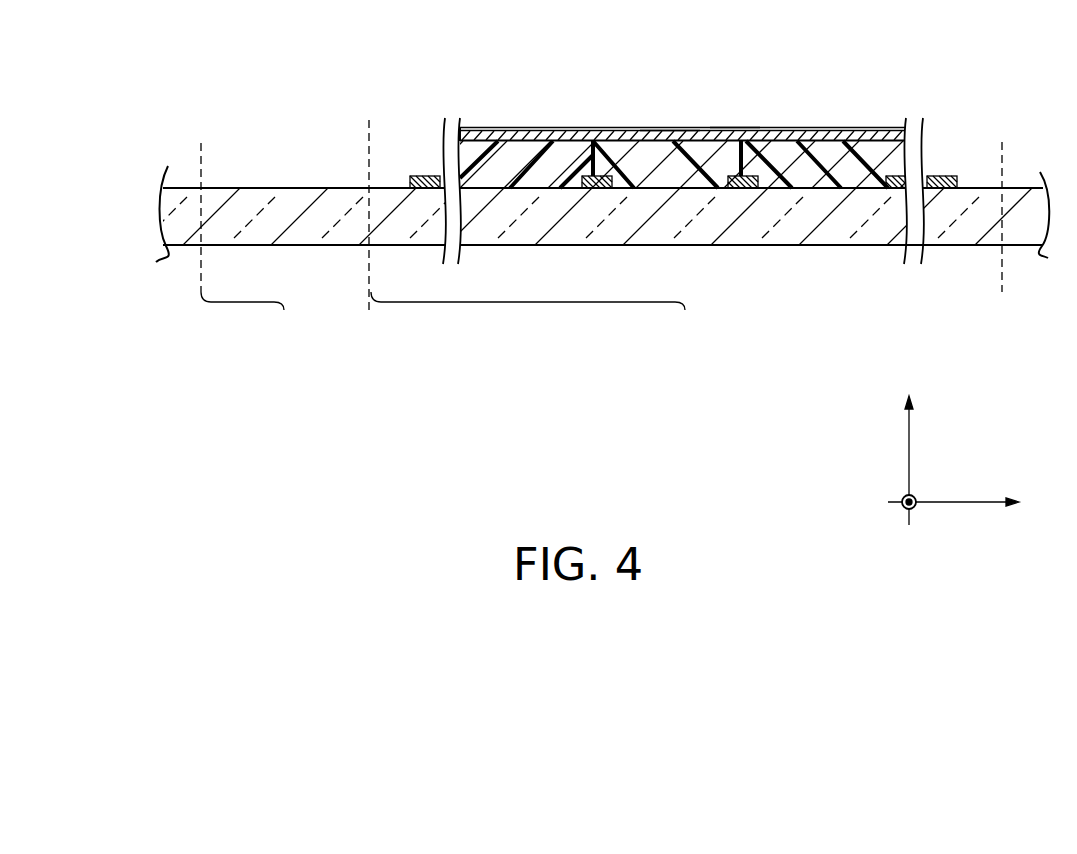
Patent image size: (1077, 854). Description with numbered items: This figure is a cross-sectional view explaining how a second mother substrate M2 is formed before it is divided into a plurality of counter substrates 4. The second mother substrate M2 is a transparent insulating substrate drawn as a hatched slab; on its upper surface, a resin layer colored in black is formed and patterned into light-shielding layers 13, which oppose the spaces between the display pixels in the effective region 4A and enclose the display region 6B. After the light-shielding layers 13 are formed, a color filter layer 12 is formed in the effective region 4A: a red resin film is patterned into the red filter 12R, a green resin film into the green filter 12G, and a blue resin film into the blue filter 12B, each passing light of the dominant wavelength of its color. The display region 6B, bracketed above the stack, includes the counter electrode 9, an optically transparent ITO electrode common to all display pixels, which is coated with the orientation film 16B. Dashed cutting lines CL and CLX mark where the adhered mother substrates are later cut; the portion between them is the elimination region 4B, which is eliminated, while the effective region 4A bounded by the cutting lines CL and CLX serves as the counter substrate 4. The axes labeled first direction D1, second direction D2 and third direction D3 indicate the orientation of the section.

The counter substrate 4 is at (1002, 292).
The effective region 4A is at (535, 319).
The elimination region 4B is at (249, 319).
The display region 6B is at (615, 110).
The counter electrode 9 is at (735, 106).
The color filter layer 12 is at (866, 123).
The red filter 12R is at (515, 158).
The green filter 12G is at (620, 165).
The blue filter 12B is at (790, 165).
The light-shielding layer 13 is at (422, 176).
The orientation film 16B is at (658, 130).
The second mother substrate M2 is at (1023, 259).
The cutting line CL is at (601, 204).
The cutting line CLX is at (367, 203).
The first direction D1 is at (957, 518).
The second direction D2 is at (916, 497).
The third direction D3 is at (926, 457).